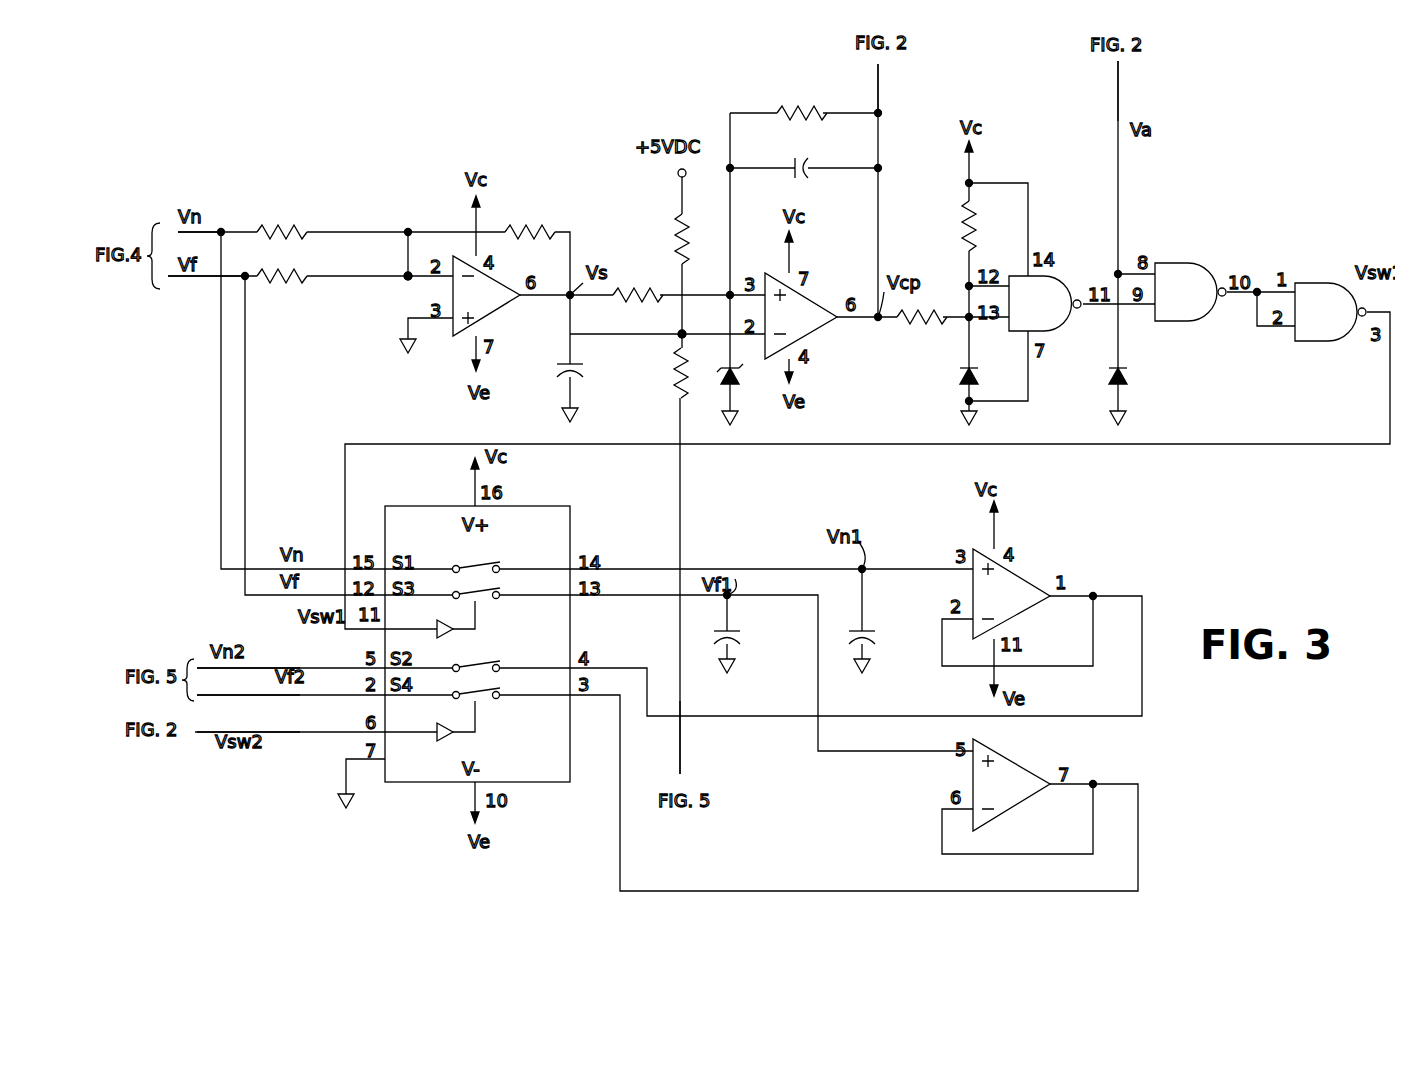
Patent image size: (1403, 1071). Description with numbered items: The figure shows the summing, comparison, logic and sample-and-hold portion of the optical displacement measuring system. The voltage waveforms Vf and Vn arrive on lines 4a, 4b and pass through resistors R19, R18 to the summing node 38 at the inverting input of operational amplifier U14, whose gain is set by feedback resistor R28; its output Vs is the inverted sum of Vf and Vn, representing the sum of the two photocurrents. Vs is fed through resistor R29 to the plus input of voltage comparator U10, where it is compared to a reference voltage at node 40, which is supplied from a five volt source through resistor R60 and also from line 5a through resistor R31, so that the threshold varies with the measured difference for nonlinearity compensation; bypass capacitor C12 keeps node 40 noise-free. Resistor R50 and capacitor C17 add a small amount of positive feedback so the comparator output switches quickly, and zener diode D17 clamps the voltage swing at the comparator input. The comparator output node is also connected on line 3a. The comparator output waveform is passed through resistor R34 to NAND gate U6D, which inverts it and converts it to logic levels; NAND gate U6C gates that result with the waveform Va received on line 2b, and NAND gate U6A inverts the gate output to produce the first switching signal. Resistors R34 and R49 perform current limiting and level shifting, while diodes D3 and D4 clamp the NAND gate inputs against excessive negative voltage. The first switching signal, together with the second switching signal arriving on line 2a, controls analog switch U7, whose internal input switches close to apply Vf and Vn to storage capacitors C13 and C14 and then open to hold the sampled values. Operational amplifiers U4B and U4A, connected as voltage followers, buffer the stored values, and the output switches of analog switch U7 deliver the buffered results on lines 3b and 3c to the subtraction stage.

The summing node 38 is at (407, 279).
The node 40 is at (683, 332).
The line 4a is at (206, 289).
The line 4b is at (199, 243).
The line 3a is at (895, 88).
The line 2b is at (1138, 91).
The line 3c is at (248, 676).
The line 3b is at (248, 701).
The line 2a is at (247, 719).
The line 5a is at (695, 741).
The resistor R18 is at (282, 220).
The resistor R19 is at (282, 264).
The feedback resistor R28 is at (530, 219).
The resistor R29 is at (638, 307).
The resistor R60 is at (661, 239).
The resistor R31 is at (664, 373).
The resistor R50 is at (802, 99).
The resistor R34 is at (922, 329).
The resistor R49 is at (949, 226).
The bypass capacitor C12 is at (588, 385).
The storage capacitor C13 is at (746, 628).
The storage capacitor C14 is at (882, 628).
The capacitor C17 is at (821, 177).
The zener diode D17 is at (751, 398).
The diode D3 is at (985, 381).
The diode D4 is at (1137, 382).
The operational amplifier U14 is at (494, 296).
The voltage comparator U10 is at (810, 316).
The NAND gate U6D is at (1045, 303).
The NAND gate U6C is at (1190, 292).
The NAND gate U6A is at (1330, 312).
The analog switch U7 is at (479, 630).
The operational amplifier U4A is at (1028, 592).
The operational amplifier U4B is at (1015, 785).